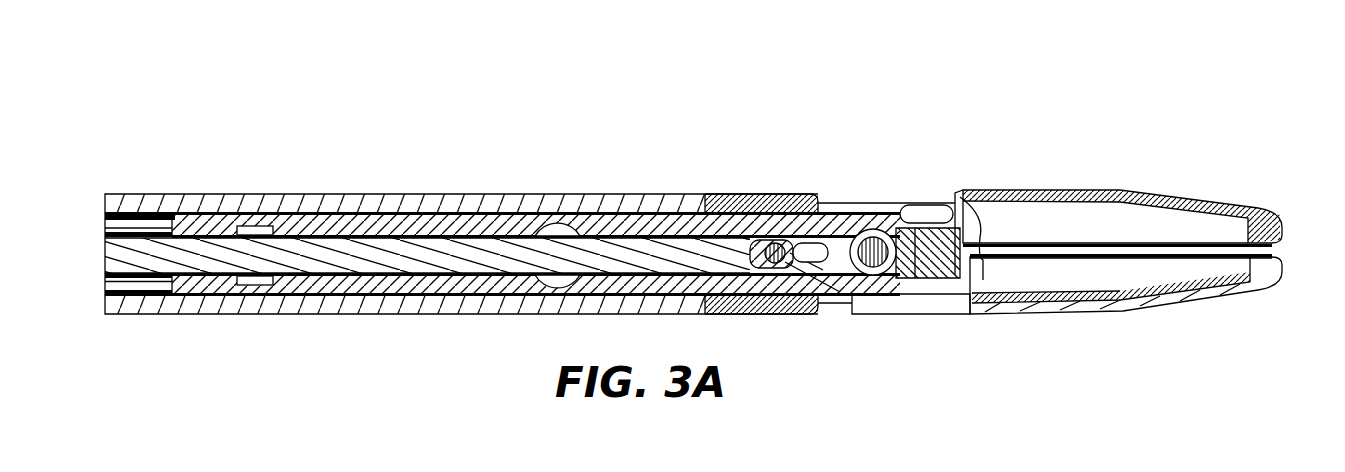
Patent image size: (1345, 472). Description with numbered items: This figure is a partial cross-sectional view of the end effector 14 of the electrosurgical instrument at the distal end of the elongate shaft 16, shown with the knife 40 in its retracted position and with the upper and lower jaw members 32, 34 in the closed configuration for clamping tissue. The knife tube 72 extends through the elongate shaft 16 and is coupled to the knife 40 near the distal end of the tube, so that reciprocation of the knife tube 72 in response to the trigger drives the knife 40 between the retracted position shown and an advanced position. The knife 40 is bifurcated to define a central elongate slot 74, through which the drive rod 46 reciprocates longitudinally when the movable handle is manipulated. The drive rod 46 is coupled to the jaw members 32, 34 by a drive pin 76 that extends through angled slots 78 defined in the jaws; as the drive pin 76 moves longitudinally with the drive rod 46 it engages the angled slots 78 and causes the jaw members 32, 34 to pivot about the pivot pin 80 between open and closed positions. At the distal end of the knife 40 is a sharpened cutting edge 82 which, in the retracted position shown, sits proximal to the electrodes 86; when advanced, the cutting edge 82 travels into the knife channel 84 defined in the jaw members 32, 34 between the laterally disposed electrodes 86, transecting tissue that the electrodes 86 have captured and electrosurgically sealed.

The end effector 14 is at (1260, 105).
The elongate shaft 16 is at (290, 93).
The upper jaw member 32 is at (1149, 185).
The lower jaw member 34 is at (1143, 321).
The knife 40 is at (483, 225).
The drive rod 46 is at (347, 255).
The knife tube 72 is at (120, 233).
The central elongate slot 74 is at (830, 236).
The drive pin 76 is at (778, 245).
The angled slots 78 is at (802, 290).
The pivot pin 80 is at (878, 274).
The sharpened cutting edge 82 is at (982, 235).
The knife channel 84 is at (1001, 284).
The electrodes 86 is at (1191, 263).